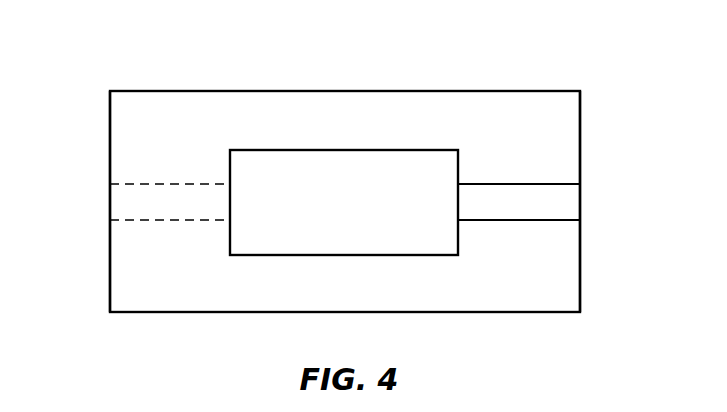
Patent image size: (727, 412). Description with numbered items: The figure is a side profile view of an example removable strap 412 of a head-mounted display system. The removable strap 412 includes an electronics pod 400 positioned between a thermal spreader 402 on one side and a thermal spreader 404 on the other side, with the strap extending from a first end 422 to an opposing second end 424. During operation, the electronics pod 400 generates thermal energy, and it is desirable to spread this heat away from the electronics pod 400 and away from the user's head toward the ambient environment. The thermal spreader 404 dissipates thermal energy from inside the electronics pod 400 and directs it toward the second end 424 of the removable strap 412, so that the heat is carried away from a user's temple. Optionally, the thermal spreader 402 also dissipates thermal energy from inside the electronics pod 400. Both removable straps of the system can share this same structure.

The removable strap 412 is at (184, 70).
The electronics pod 400 is at (325, 217).
The first end 422 is at (109, 148).
The second end 424 is at (581, 148).
The thermal spreader 402 is at (133, 207).
The thermal spreader 404 is at (558, 207).